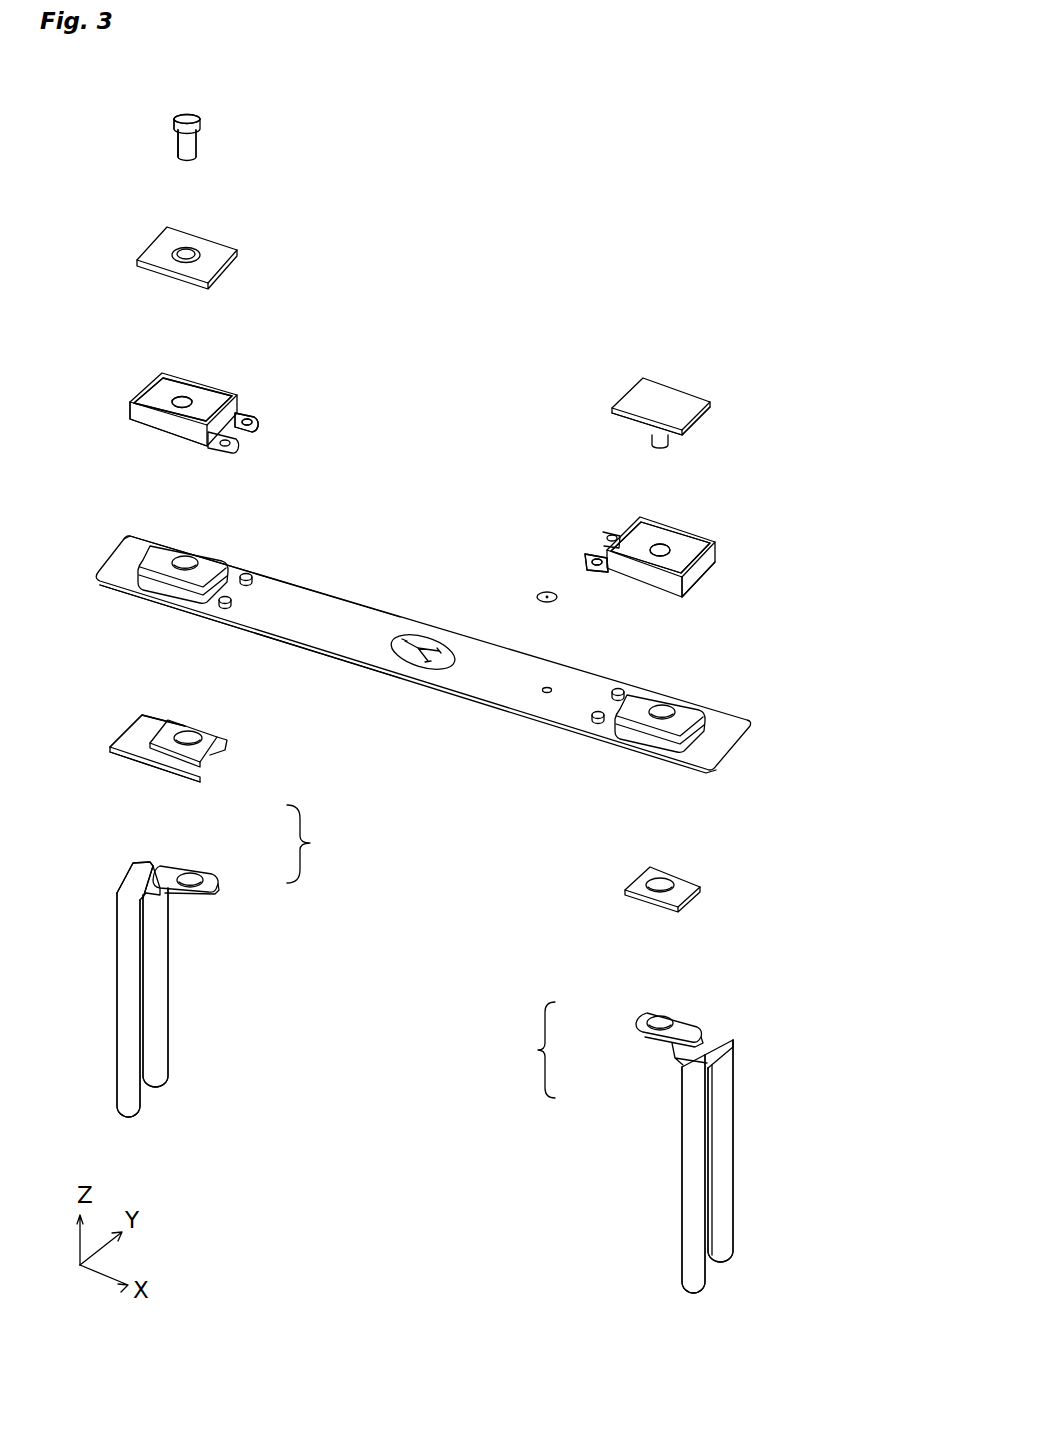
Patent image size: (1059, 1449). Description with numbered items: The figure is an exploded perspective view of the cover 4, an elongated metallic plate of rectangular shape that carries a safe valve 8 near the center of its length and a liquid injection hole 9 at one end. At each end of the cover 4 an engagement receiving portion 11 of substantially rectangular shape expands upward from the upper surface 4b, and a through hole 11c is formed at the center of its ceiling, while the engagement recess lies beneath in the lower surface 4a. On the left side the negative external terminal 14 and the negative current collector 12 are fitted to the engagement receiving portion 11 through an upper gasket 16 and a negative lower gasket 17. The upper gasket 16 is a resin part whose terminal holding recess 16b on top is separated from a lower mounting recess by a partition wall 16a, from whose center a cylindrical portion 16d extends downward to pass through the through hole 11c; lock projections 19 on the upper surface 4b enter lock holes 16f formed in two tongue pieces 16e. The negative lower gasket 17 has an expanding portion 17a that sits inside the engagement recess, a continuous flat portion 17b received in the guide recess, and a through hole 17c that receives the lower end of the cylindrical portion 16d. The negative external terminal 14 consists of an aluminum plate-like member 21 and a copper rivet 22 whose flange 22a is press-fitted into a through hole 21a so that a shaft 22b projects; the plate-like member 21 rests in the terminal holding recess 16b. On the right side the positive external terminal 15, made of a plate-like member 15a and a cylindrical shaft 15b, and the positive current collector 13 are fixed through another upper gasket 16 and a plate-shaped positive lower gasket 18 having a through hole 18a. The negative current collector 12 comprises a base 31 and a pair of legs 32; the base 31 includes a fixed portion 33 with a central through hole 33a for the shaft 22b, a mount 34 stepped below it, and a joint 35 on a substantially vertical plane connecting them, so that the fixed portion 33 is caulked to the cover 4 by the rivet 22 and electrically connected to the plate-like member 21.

The cover 4 is at (103, 546).
The lower surface 4a is at (117, 585).
The upper surface 4b is at (138, 543).
The safe valve 8 is at (418, 660).
The liquid injection hole 9 is at (547, 688).
The engagement receiving portion 11 is at (167, 587).
The through hole 11c is at (192, 562).
The negative current collector 12 is at (107, 928).
The positive current collector 13 is at (738, 1133).
The negative external terminal 14 is at (247, 134).
The positive external terminal 15 is at (692, 392).
The plate-like member 15a is at (703, 418).
The cylindrical shaft 15b is at (667, 440).
The upper gasket 16 is at (144, 365).
The partition wall 16a is at (187, 377).
The terminal holding recess 16b is at (140, 404).
The cylindrical portion 16d is at (190, 402).
The tongue pieces 16e is at (263, 424).
The lock holes 16f is at (243, 409).
The negative lower gasket 17 is at (119, 726).
The expanding portion 17a is at (223, 732).
The flat portion 17b is at (133, 750).
The through hole 17c is at (187, 733).
The positive lower gasket 18 is at (700, 887).
The through hole 18a is at (667, 880).
The lock projections 19 is at (250, 572).
The plate-like member 21 is at (158, 249).
The through hole 21a is at (197, 250).
The rivet 22 is at (175, 121).
The flange 22a is at (187, 117).
The shaft 22b is at (193, 147).
The base 31 is at (421, 951).
The legs 32 is at (165, 995).
The fixed portion 33 is at (200, 868).
The through hole 33a is at (193, 887).
The mount 34 is at (158, 860).
The joint 35 is at (170, 882).